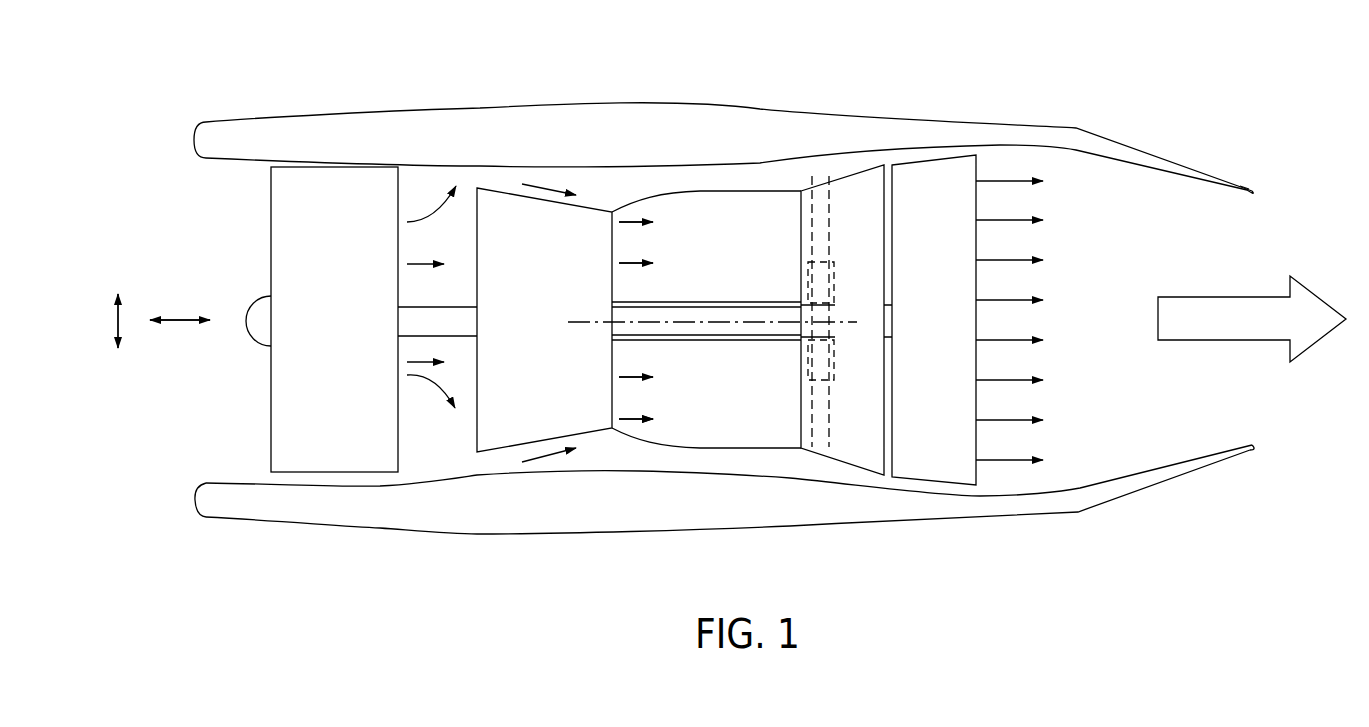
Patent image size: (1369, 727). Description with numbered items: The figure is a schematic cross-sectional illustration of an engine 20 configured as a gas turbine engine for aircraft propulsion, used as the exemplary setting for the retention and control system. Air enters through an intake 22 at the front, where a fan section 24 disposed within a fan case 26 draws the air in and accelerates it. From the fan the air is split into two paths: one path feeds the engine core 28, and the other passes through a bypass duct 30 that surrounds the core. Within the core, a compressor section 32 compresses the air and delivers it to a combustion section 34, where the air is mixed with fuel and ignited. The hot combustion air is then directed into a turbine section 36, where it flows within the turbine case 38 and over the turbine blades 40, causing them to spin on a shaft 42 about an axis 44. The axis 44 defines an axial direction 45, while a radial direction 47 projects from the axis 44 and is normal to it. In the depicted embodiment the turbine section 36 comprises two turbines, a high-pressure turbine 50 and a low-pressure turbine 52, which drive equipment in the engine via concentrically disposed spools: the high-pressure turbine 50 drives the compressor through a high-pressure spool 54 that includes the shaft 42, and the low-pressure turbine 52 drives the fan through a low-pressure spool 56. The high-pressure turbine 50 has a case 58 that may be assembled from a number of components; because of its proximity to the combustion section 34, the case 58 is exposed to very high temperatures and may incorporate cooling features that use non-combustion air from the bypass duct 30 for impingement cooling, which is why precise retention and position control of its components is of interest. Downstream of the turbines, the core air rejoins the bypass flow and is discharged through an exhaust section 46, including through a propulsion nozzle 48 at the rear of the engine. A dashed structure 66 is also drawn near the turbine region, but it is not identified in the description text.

The engine 20 is at (975, 99).
The intake 22 is at (228, 210).
The fan section 24 is at (348, 437).
The fan case 26 is at (246, 126).
The engine core 28 is at (598, 200).
The bypass duct 30 is at (500, 178).
The compressor section 32 is at (560, 249).
The combustion section 34 is at (718, 295).
The turbine section 36 is at (877, 148).
The turbine case 38 is at (899, 165).
The turbine blades 40 is at (831, 412).
The shaft 42 is at (752, 341).
The axis 44 is at (580, 322).
The axial direction 45 is at (181, 320).
The exhaust section 46 is at (1113, 217).
The radial direction 47 is at (118, 318).
The propulsion nozzle 48 is at (1246, 186).
The high-pressure turbine 50 is at (878, 407).
The low-pressure turbine 52 is at (948, 235).
The high-pressure spool 54 is at (752, 302).
The low-pressure spool 56 is at (462, 306).
The case 58 is at (840, 183).
The bearing housing 66 is at (830, 262).